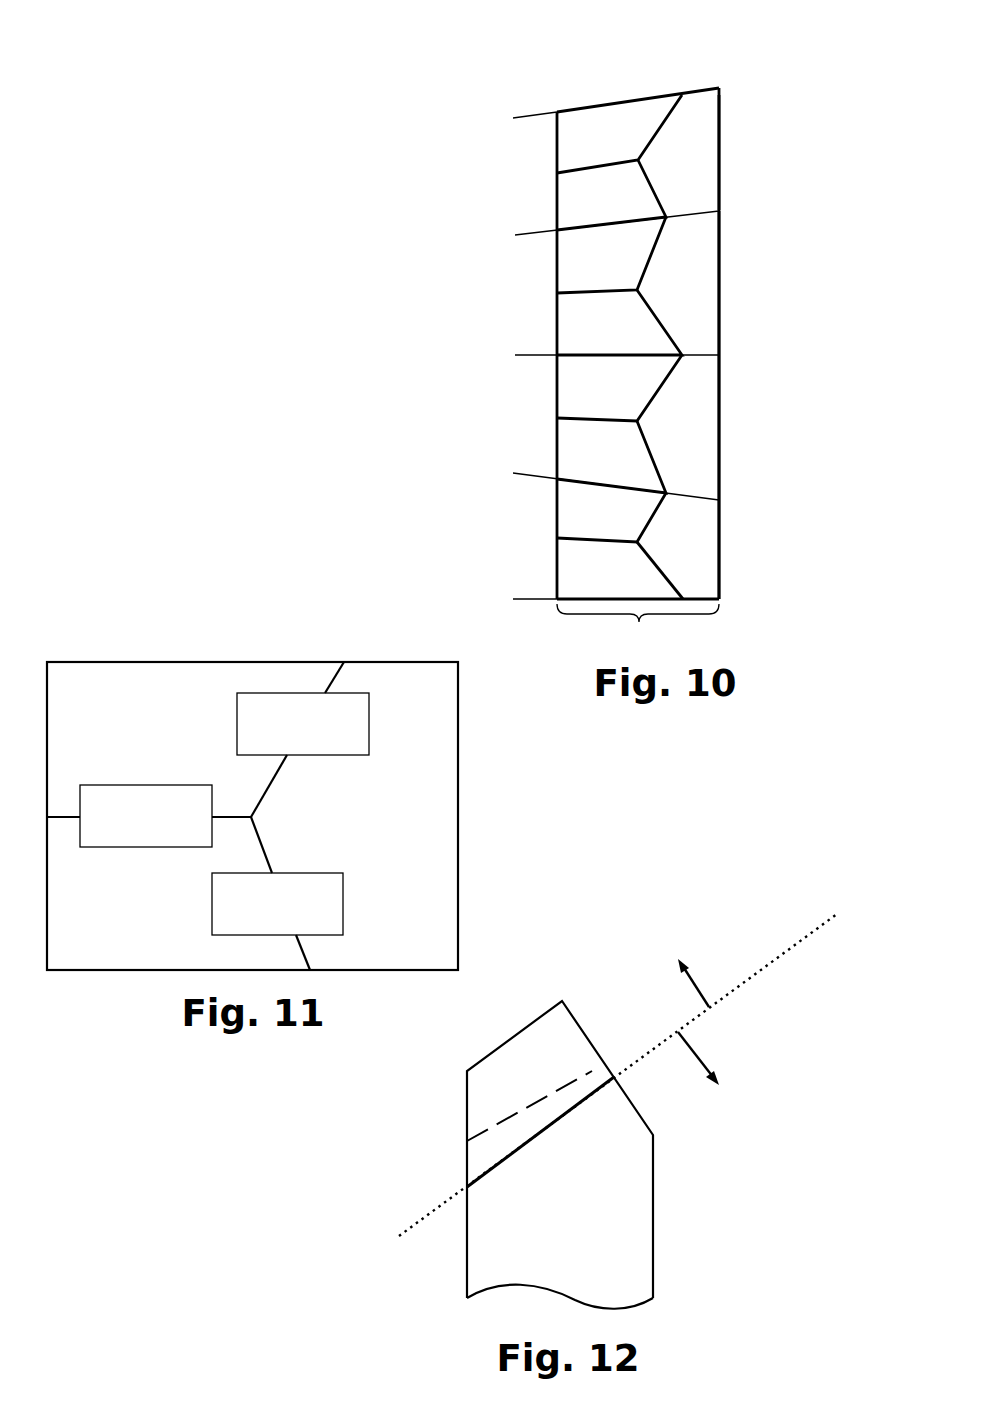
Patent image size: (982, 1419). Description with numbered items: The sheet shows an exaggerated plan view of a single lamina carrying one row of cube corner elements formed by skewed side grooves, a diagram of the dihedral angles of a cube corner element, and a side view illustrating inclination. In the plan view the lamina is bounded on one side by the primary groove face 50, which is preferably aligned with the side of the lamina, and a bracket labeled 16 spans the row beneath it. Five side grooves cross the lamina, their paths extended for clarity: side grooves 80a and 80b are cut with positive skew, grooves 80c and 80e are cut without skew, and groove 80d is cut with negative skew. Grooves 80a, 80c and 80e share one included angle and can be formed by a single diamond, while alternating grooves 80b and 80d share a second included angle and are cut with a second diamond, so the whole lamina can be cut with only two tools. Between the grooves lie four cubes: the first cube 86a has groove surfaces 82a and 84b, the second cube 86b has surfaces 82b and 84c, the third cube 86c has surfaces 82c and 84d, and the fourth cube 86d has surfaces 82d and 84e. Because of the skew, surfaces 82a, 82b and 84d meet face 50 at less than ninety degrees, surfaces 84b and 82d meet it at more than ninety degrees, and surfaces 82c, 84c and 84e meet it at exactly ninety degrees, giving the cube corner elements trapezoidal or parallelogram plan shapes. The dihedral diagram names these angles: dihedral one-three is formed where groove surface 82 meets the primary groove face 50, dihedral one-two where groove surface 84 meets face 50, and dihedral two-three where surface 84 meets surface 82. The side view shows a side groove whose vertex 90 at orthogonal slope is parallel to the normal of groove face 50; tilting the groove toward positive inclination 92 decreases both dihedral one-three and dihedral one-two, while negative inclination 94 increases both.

In FIG. 10, the cutting element width 16 is at (638, 632).
In FIG. 10, the primary groove face 50 is at (718, 82).
In FIG. 11, the primary groove face 50 is at (252, 816).
In FIG. 12, the primary groove face 50 is at (571, 1013).
In FIG. 10, the side groove 80a is at (528, 120).
In FIG. 10, the side groove 80b is at (528, 238).
In FIG. 10, the side groove 80c is at (528, 357).
In FIG. 10, the side groove 80d is at (528, 476).
In FIG. 10, the side groove 80e is at (528, 601).
In FIG. 11, the groove surface 82 is at (195, 702).
In FIG. 10, the groove surface 82a is at (619, 134).
In FIG. 10, the groove surface 82b is at (611, 255).
In FIG. 10, the groove surface 82c is at (619, 388).
In FIG. 10, the groove surface 82d is at (611, 517).
In FIG. 11, the groove surface 84 is at (178, 932).
In FIG. 10, the groove surface 84b is at (611, 195).
In FIG. 10, the groove surface 84c is at (619, 322).
In FIG. 10, the groove surface 84d is at (611, 457).
In FIG. 10, the groove surface 84e is at (628, 570).
In FIG. 10, the first cube 86a is at (730, 143).
In FIG. 10, the second cube 86b is at (730, 270).
In FIG. 10, the third cube 86c is at (730, 422).
In FIG. 10, the fourth cube 86d is at (730, 551).
In FIG. 12, the vertex 90 is at (802, 939).
In FIG. 12, the positive inclination 92 is at (700, 992).
In FIG. 12, the negative inclination 94 is at (695, 1054).